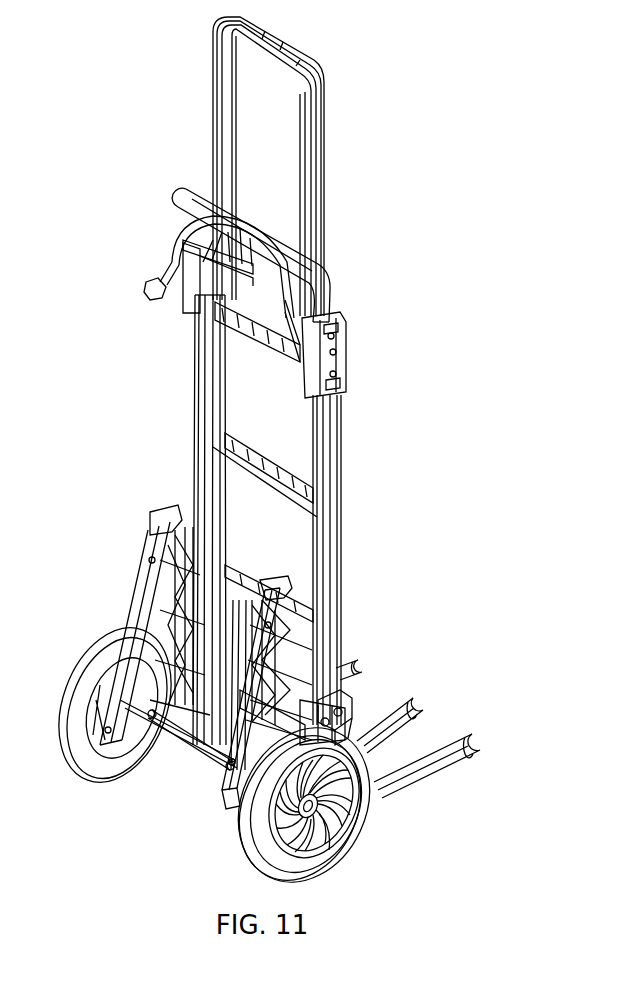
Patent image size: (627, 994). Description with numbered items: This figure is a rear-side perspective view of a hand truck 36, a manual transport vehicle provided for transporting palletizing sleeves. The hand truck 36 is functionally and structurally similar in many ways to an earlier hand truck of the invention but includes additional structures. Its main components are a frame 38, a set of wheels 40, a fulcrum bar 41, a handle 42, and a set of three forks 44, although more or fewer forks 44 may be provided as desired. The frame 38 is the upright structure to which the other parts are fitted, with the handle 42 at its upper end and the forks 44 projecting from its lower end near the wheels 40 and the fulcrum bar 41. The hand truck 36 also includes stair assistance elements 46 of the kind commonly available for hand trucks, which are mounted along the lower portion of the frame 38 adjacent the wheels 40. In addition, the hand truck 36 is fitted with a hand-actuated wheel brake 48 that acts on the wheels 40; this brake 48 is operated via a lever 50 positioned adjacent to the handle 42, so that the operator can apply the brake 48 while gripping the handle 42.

The hand truck 36 is at (90, 173).
The frame 38 is at (324, 152).
The wheels 40 is at (74, 750).
The fulcrum bar 41 is at (200, 748).
The handle 42 is at (186, 189).
The forks 44 is at (362, 666).
The stair assistance elements 46 is at (140, 598).
The hand-actuated wheel brake 48 is at (350, 712).
The lever 50 is at (170, 239).